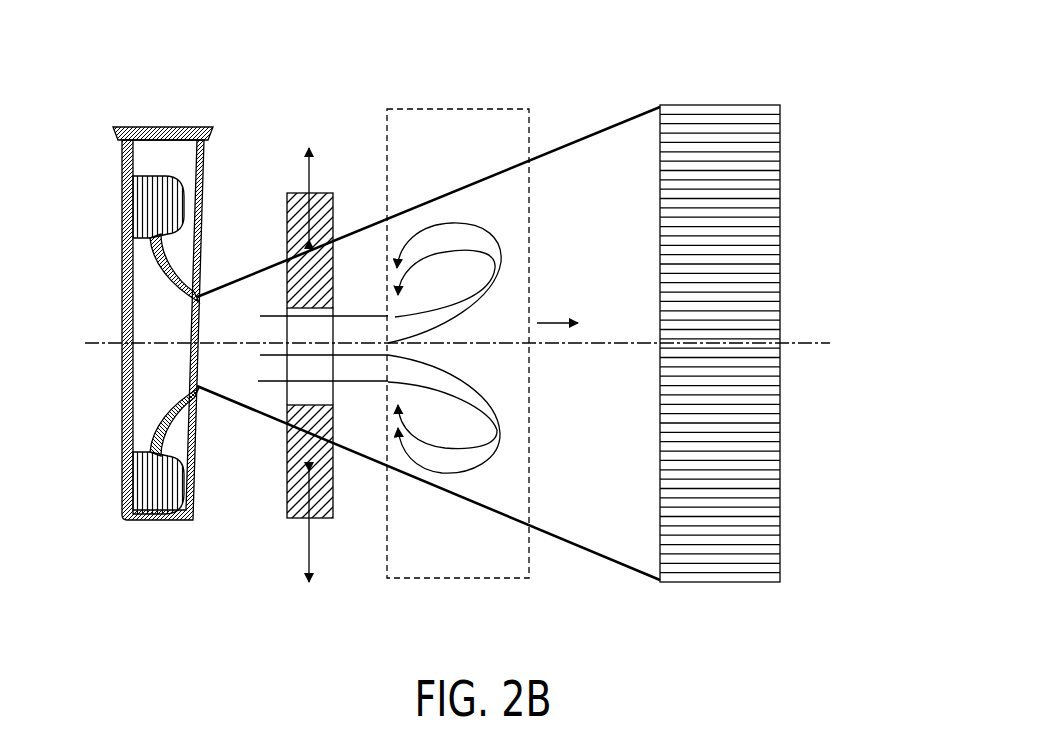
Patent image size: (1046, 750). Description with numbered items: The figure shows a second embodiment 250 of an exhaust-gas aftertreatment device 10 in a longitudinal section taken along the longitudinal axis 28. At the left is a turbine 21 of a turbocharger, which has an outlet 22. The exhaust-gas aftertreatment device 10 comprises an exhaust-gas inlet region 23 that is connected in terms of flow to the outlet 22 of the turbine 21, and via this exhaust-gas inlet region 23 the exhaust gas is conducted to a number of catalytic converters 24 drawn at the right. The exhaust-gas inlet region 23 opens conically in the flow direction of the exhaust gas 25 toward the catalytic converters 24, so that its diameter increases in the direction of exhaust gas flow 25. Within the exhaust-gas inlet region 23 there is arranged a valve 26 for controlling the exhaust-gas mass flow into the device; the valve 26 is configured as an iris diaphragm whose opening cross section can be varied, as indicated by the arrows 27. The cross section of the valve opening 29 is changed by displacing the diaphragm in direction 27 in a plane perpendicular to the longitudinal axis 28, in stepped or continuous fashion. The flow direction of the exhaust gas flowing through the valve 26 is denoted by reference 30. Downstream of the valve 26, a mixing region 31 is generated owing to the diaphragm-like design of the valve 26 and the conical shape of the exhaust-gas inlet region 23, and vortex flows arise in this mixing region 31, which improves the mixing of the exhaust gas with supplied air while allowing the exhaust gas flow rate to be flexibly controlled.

The exhaust-gas aftertreatment device 10 is at (814, 138).
The turbine 21 is at (113, 150).
The outlet 22 is at (195, 318).
The exhaust-gas inlet region 23 is at (263, 418).
The catalytic converters 24 is at (780, 530).
The flow direction of the exhaust gas 25 is at (567, 323).
The valve 26 is at (286, 505).
The arrows 27 is at (308, 162).
The longitudinal axis 28 is at (615, 343).
The valve opening 29 is at (335, 383).
The flow direction of the exhaust gas flowing through the valve 30 is at (501, 248).
The mixing region 31 is at (457, 108).
The second embodiment 250 is at (798, 39).